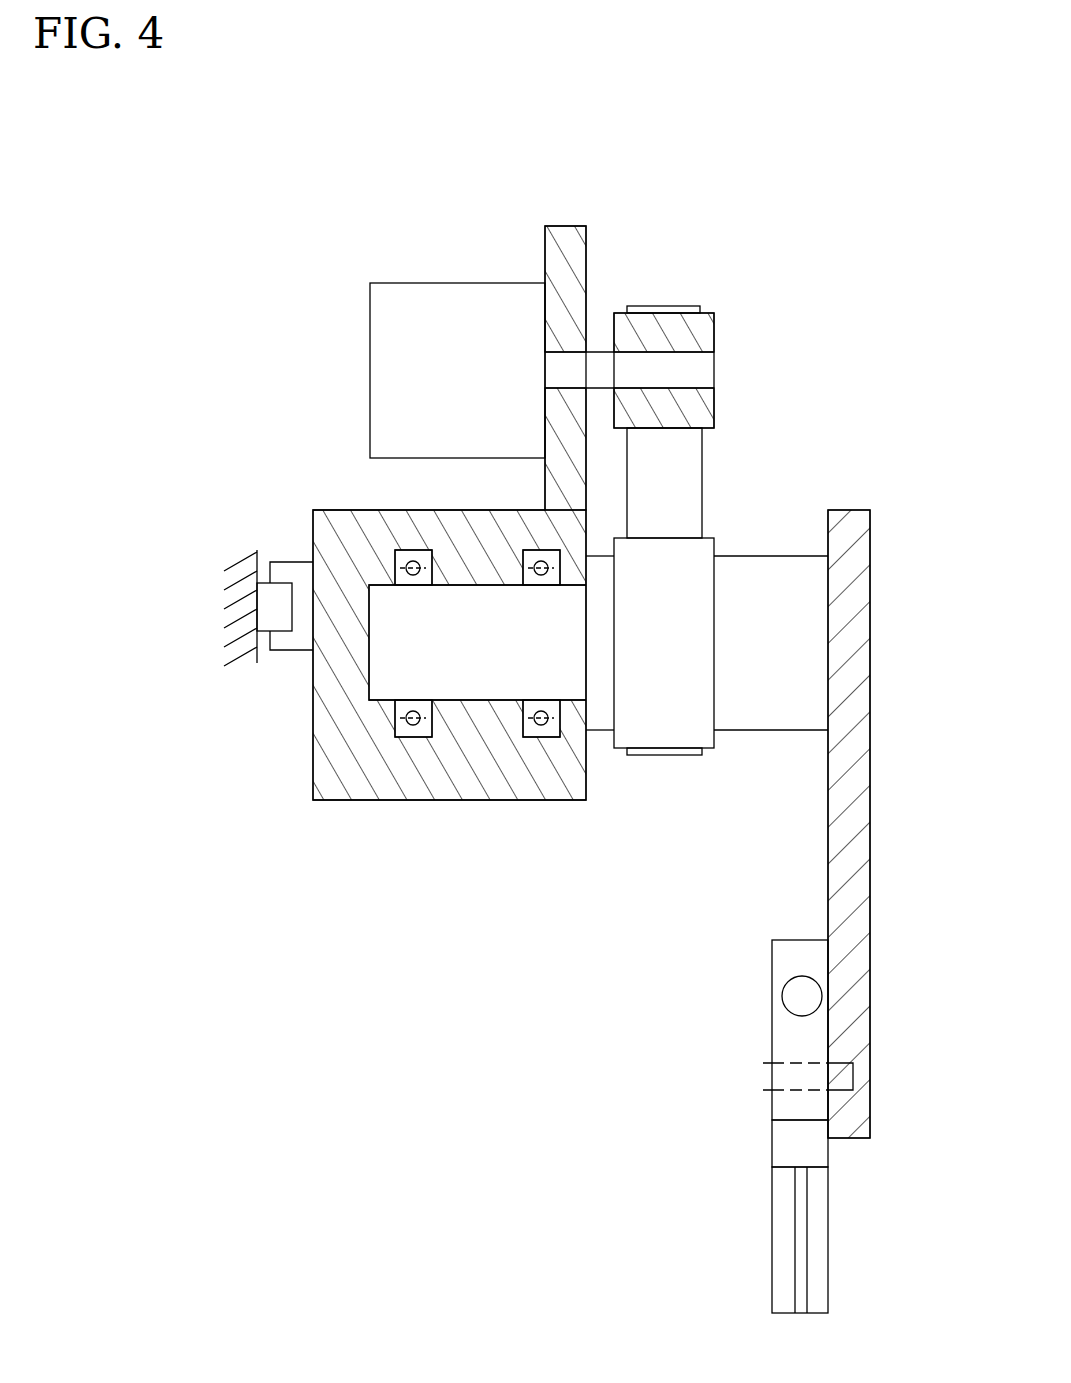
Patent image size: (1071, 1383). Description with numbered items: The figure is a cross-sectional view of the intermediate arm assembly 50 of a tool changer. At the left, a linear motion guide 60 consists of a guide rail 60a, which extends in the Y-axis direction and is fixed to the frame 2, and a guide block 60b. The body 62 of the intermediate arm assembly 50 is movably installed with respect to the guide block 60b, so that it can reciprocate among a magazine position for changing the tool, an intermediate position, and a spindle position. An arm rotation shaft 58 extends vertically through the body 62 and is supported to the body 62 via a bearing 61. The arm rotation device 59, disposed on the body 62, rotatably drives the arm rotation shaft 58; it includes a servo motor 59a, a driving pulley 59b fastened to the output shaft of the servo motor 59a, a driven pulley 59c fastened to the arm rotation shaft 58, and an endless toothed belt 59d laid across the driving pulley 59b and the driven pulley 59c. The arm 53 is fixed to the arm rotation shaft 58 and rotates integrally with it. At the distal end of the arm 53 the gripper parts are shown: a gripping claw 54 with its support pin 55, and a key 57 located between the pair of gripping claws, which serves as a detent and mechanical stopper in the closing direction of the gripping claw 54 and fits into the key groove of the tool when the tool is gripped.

The frame 2 is at (242, 550).
The intermediate arm assembly 50 is at (915, 128).
The arm 53 is at (828, 870).
The gripping claw 54 is at (772, 1186).
The support pin 55 is at (763, 1075).
The key 57 is at (772, 1130).
The arm rotation shaft 58 is at (752, 730).
The arm rotation device 59 is at (714, 260).
The servo motor 59a is at (370, 348).
The driving pulley 59b is at (714, 313).
The driven pulley 59c is at (714, 538).
The endless toothed belt 59d is at (702, 452).
The linear motion guide 60 is at (150, 590).
The guide rail 60a is at (257, 592).
The guide block 60b is at (292, 650).
The bearing 61 is at (541, 737).
The body 62 is at (460, 800).